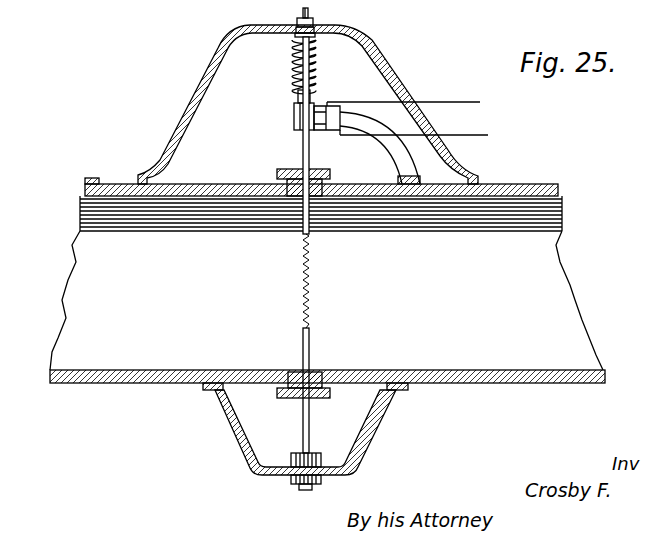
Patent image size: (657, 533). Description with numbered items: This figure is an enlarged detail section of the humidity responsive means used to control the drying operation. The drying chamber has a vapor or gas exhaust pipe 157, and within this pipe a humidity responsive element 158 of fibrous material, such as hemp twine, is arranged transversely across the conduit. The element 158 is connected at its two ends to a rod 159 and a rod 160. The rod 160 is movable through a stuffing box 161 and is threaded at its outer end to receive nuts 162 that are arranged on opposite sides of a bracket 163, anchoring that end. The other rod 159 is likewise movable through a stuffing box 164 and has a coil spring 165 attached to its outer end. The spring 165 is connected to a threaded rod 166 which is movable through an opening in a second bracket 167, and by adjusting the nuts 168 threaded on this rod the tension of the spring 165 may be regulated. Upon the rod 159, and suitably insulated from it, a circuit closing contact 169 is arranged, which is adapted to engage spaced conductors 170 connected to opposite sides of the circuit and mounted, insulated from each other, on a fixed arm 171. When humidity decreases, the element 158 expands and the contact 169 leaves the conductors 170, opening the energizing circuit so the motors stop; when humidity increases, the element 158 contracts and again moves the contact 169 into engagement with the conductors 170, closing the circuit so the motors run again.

The exhaust pipe 157 is at (327, 280).
The humidity responsive element 158 is at (310, 295).
The rod 159 is at (312, 233).
The rod 160 is at (310, 348).
The stuffing box 161 is at (293, 380).
The nuts 162 is at (320, 463).
The bracket 163 is at (378, 428).
The stuffing box 164 is at (293, 192).
The coil spring 165 is at (317, 68).
The threaded rod 166 is at (313, 15).
The second bracket 167 is at (398, 60).
The nuts 168 is at (297, 33).
The circuit closing contact 169 is at (294, 125).
The spaced conductors 170 is at (355, 110).
The fixed arm 171 is at (380, 147).